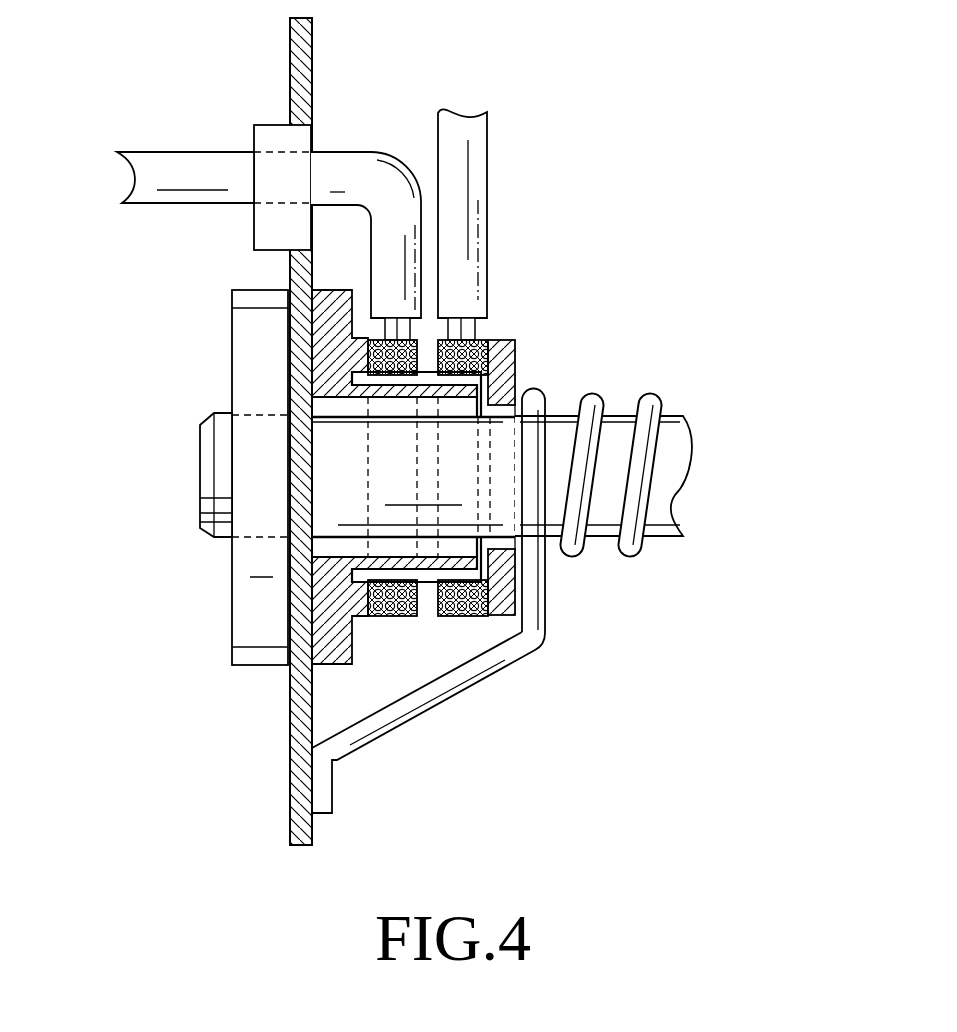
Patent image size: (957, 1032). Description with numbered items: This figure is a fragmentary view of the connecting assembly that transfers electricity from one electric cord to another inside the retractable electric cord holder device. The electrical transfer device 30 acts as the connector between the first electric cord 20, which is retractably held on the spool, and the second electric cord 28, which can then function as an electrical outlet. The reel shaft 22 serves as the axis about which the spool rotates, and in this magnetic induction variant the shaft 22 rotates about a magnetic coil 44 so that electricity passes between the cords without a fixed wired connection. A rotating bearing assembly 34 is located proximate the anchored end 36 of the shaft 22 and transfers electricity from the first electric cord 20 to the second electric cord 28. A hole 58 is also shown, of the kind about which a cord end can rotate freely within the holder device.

The first electric cord 20 is at (510, 159).
The reel shaft 22 is at (699, 491).
The second electric cord 28 is at (200, 110).
The electrical transfer device 30 is at (534, 356).
The rotating bearing assembly 34 is at (328, 690).
The anchored end 36 is at (187, 394).
The magnetic coil 44 is at (478, 340).
The hole 58 is at (266, 268).